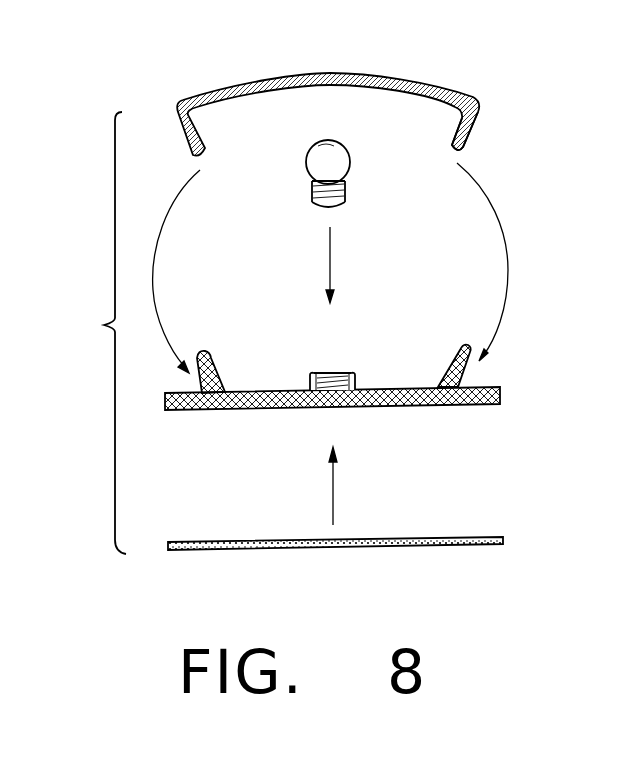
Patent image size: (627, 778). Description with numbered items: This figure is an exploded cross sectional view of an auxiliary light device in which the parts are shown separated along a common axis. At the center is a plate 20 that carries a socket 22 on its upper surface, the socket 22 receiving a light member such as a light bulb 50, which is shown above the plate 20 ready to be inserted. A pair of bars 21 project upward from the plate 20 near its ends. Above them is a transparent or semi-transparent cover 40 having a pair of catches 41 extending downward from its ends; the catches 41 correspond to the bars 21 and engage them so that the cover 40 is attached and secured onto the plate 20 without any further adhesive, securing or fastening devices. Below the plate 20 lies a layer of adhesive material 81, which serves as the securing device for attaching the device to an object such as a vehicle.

The plate 20 is at (483, 395).
The bars 21 is at (203, 362).
The socket 22 is at (355, 375).
The cover 40 is at (430, 84).
The catches 41 is at (473, 133).
The light bulb 50 is at (348, 163).
The adhesive material 81 is at (492, 543).